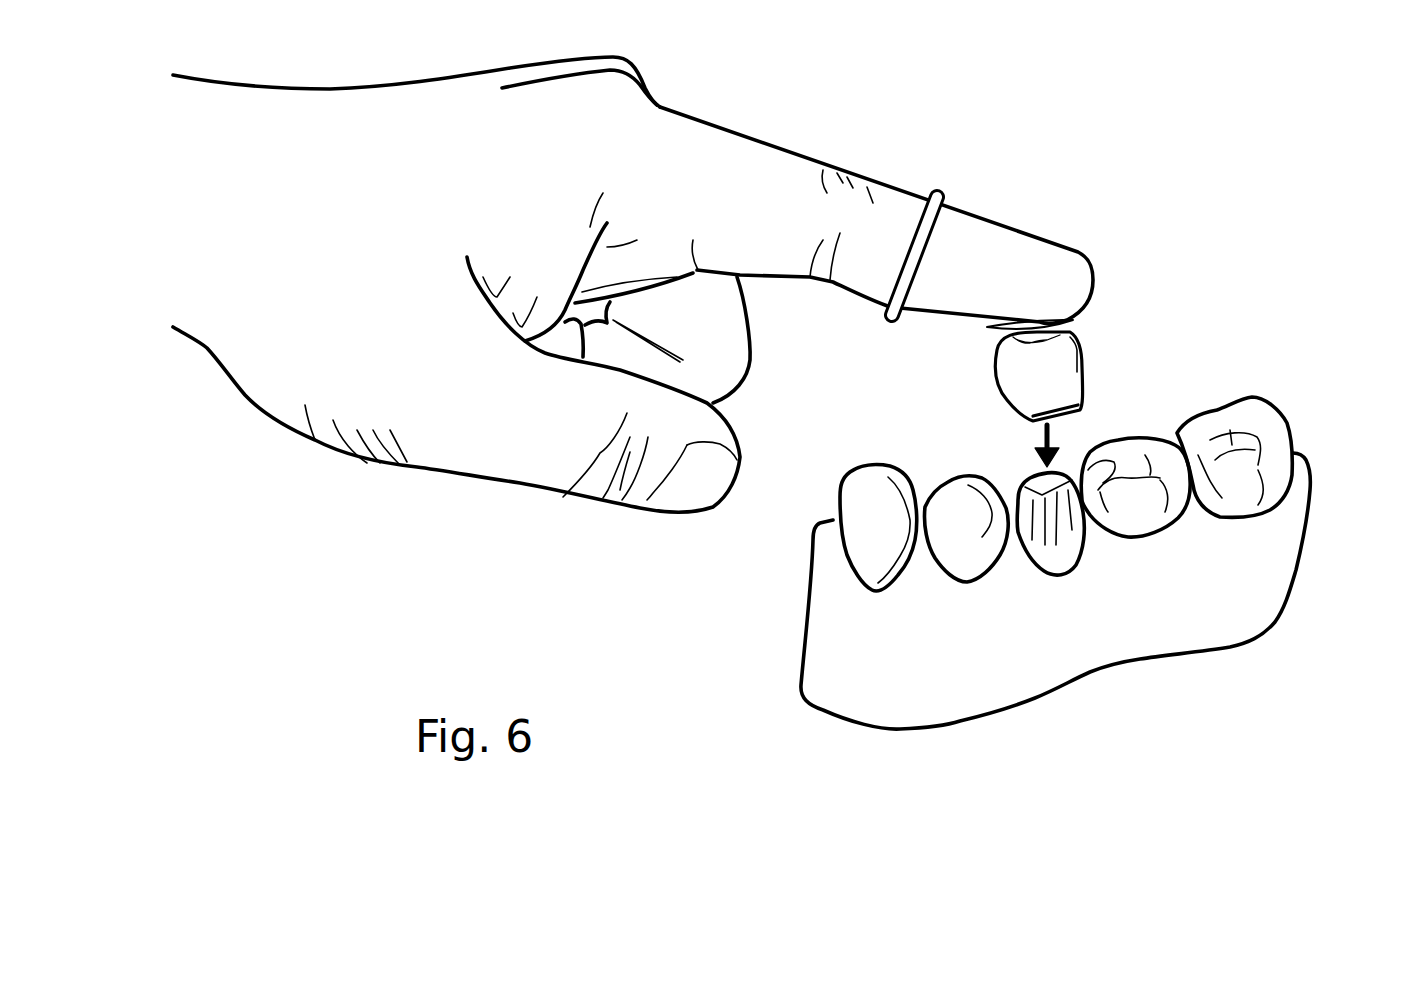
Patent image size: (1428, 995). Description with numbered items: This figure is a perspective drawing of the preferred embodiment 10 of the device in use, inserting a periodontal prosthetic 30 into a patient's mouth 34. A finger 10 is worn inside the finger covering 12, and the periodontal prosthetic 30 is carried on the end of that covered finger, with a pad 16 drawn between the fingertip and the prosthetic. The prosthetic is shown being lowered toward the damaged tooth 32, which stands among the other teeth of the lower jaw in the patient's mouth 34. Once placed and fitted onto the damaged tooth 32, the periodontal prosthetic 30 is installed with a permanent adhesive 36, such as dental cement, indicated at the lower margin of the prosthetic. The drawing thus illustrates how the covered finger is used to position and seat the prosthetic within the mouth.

The preferred embodiment 10 is at (1212, 220).
The finger covering 12 is at (1020, 238).
The adhesive pad 16 is at (1075, 322).
The periodontal prosthetic 30 is at (1085, 358).
The damaged tooth 32 is at (1090, 560).
The patient's mouth 34 is at (1338, 489).
The permanent adhesive 36 is at (1030, 424).